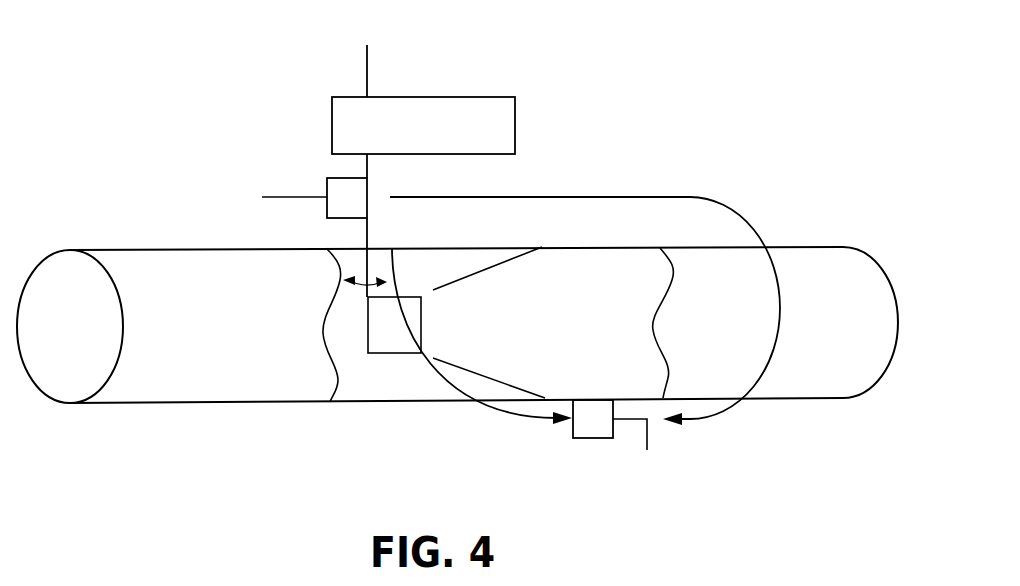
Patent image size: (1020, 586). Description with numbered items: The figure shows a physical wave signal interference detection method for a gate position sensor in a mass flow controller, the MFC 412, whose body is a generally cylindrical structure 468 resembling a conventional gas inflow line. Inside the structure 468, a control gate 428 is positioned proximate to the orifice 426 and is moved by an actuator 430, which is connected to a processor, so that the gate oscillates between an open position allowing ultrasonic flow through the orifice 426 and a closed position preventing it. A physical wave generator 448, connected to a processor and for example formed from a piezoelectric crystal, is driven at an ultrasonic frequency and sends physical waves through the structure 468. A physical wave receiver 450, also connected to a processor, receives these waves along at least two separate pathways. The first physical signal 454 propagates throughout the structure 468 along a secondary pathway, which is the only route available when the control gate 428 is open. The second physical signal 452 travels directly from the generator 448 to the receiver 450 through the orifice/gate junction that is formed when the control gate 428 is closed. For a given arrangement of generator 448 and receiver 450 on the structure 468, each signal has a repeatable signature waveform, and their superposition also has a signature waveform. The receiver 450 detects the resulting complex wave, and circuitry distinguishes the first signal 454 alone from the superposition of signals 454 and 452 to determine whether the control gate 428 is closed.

The MFC 412 is at (712, 141).
The orifice 426 is at (490, 378).
The control gate 428 is at (395, 354).
The actuator 430 is at (458, 97).
The physical wave generator 448 is at (357, 193).
The physical wave receiver 450 is at (582, 428).
The second physical signal 452 is at (492, 412).
The first physical signal 454 is at (545, 197).
The structure 468 is at (847, 338).